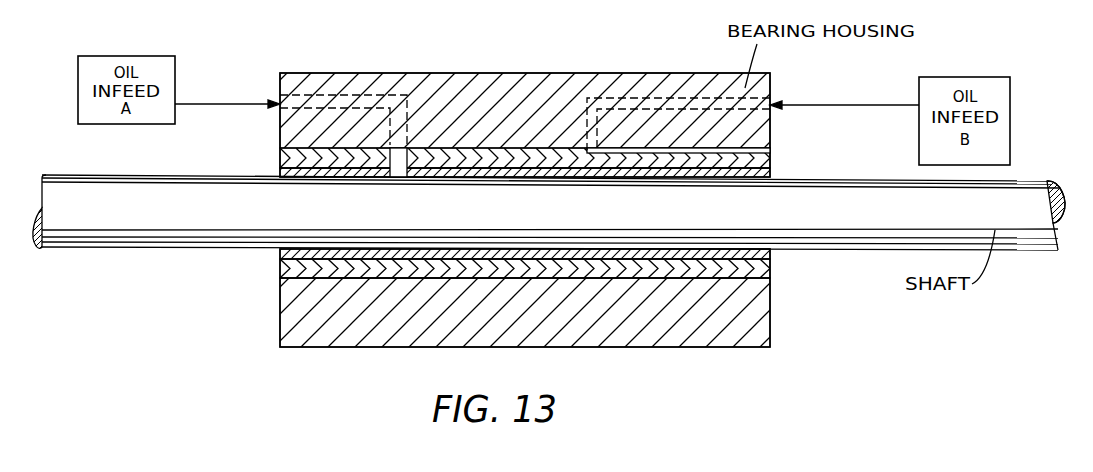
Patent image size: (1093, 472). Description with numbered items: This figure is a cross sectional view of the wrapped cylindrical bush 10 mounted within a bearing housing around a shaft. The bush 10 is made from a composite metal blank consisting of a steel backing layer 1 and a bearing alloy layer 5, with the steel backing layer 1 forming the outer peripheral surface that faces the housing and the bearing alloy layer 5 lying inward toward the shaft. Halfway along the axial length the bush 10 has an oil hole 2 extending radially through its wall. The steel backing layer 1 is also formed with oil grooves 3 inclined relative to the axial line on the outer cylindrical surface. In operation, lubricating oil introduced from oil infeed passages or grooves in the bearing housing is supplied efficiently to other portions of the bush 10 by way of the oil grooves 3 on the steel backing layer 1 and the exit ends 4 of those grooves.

The steel backing layer 1 is at (280, 147).
The oil hole 2 is at (399, 160).
The oil grooves 3 is at (632, 171).
The exit ends 4 is at (768, 142).
The bearing alloy layer 5 is at (770, 172).
The wrapped cylindrical bush 10 is at (782, 290).